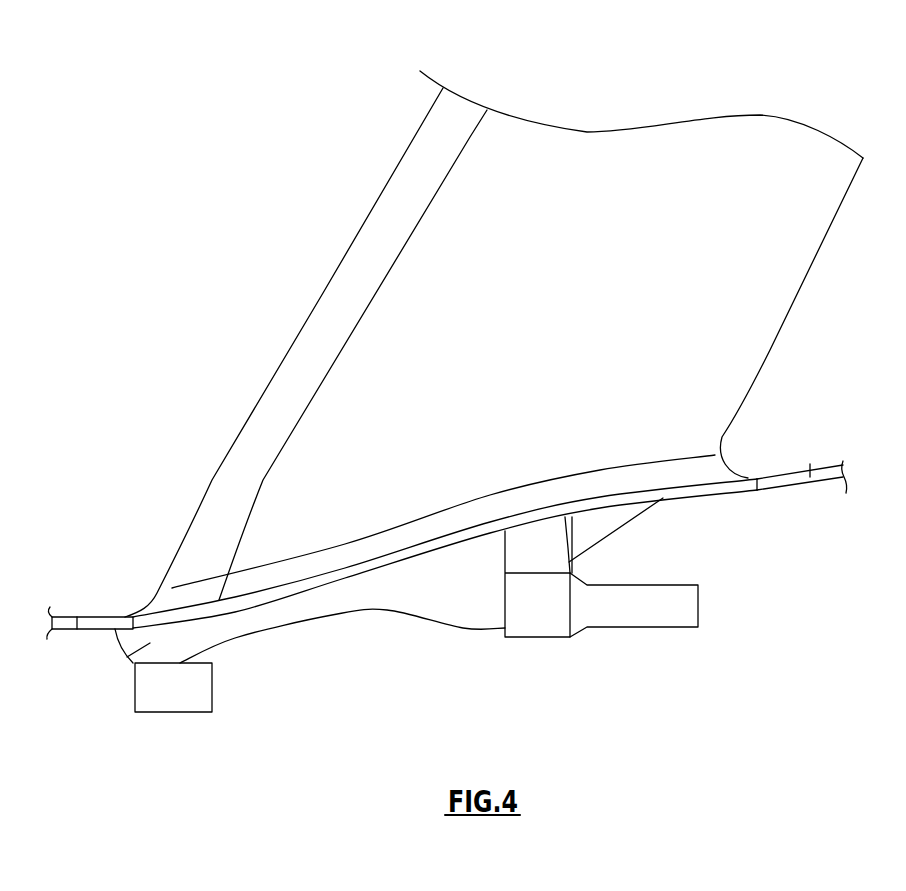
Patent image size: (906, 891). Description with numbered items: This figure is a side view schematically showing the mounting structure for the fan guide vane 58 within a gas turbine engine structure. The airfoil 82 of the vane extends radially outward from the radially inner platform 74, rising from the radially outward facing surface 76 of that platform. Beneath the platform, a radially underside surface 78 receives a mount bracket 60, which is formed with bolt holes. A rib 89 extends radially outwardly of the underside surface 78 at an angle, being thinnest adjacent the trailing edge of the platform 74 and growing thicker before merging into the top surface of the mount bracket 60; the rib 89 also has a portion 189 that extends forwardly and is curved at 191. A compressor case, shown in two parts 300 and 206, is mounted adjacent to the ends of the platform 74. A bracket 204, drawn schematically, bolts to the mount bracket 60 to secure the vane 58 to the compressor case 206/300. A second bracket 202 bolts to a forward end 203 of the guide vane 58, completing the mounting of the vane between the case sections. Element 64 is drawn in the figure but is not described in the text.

The fan guide vane 58 is at (740, 80).
The airfoil 82 is at (218, 465).
The compressor case 300 is at (72, 617).
The radially underside surface 78 is at (740, 495).
The radially outward facing surface 76 is at (755, 479).
The radially inner platform 74 is at (763, 492).
The compressor case 206 is at (812, 480).
The rib 89 is at (608, 520).
The mount bracket 60 is at (532, 613).
The neck 64 is at (553, 535).
The bracket 204 is at (663, 612).
The curved portion 191 is at (335, 618).
The forwardly extending portion 189 is at (427, 585).
The forward end 203 is at (128, 658).
The second bracket 202 is at (175, 693).